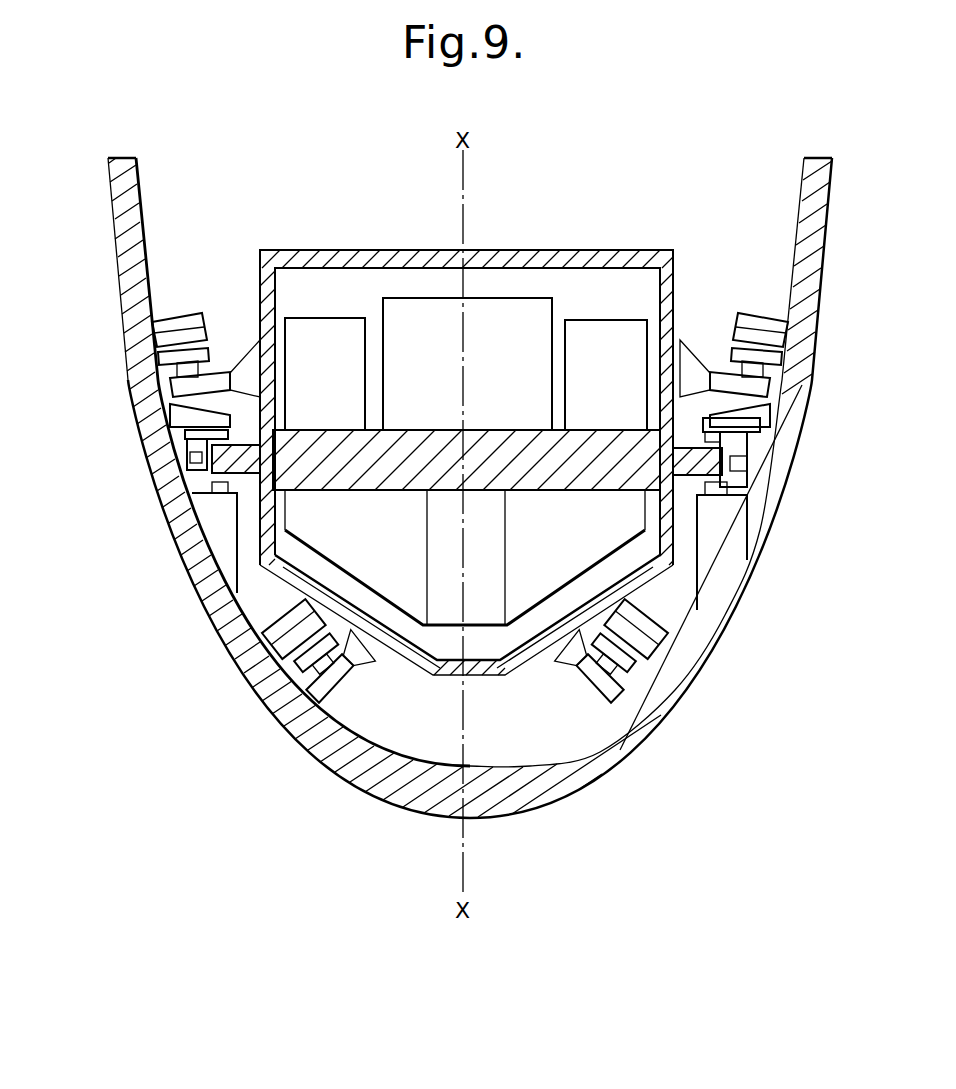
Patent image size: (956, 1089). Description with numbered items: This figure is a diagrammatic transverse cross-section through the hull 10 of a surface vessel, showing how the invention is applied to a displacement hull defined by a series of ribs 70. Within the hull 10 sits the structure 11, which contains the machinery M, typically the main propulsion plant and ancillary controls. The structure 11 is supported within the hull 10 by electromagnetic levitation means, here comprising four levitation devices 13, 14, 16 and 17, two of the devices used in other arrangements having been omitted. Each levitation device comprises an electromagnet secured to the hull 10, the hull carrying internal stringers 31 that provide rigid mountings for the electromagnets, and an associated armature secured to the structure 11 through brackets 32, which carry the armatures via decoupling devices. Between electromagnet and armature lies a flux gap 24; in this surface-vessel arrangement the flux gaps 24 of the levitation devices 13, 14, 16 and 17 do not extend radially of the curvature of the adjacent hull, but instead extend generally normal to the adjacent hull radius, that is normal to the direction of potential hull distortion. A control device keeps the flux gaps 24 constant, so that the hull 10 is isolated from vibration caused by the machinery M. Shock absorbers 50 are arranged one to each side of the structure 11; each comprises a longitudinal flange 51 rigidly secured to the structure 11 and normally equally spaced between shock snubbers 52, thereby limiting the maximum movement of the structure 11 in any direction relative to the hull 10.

The hull 10 is at (818, 315).
The structure 11 is at (557, 252).
The levitation device 13 is at (116, 318).
The levitation device 14 is at (262, 684).
The levitation device 16 is at (794, 355).
The levitation device 17 is at (660, 677).
The flux gap 24 is at (176, 373).
The internal stringer 31 is at (168, 318).
The bracket 32 is at (247, 370).
The shock absorber 50 is at (790, 483).
The longitudinal flange 51 is at (222, 484).
The shock snubber 52 is at (192, 458).
The rib 70 is at (766, 508).
The machinery M is at (522, 325).